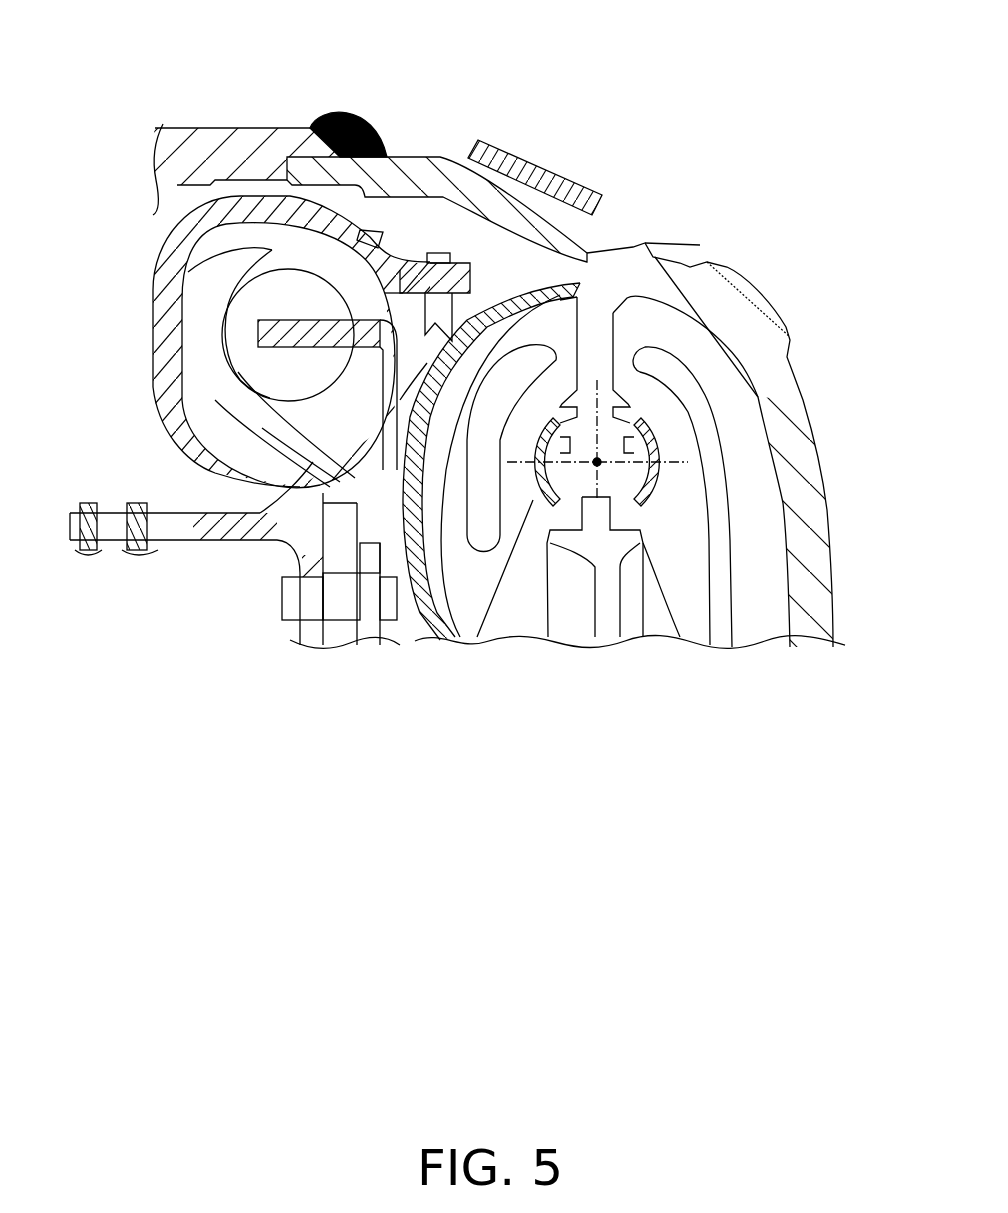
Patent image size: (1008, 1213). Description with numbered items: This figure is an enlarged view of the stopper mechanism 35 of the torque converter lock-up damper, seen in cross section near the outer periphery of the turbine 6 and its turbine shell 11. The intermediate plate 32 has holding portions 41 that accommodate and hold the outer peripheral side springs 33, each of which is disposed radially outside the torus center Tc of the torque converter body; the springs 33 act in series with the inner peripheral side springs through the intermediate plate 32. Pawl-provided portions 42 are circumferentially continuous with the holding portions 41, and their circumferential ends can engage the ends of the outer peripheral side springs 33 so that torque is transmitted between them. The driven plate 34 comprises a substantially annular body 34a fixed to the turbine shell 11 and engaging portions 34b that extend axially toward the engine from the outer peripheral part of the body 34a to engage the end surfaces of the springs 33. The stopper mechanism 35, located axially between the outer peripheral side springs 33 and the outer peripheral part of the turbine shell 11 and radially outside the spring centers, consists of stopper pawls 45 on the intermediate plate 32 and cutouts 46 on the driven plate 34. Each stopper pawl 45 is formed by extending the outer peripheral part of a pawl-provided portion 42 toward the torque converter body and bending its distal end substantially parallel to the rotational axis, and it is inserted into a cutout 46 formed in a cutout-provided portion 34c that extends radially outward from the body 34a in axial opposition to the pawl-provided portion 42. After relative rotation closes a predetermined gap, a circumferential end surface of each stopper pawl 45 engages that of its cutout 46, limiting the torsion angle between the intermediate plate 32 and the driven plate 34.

The turbine 6 is at (563, 277).
The turbine shell 11 is at (647, 243).
The intermediate plate 32 is at (150, 292).
The outer peripheral side springs 33 is at (197, 357).
The driven plate 34 is at (247, 547).
The body 34a is at (323, 557).
The engaging portions 34b is at (233, 387).
The cutout-provided portions 34c is at (452, 618).
The stopper mechanism 35 is at (495, 262).
The holding portions 41 is at (282, 133).
The pawl-provided portions 42 is at (357, 237).
The stopper pawls 45 is at (428, 252).
The cutouts 46 is at (497, 153).
The torus center Tc is at (597, 462).